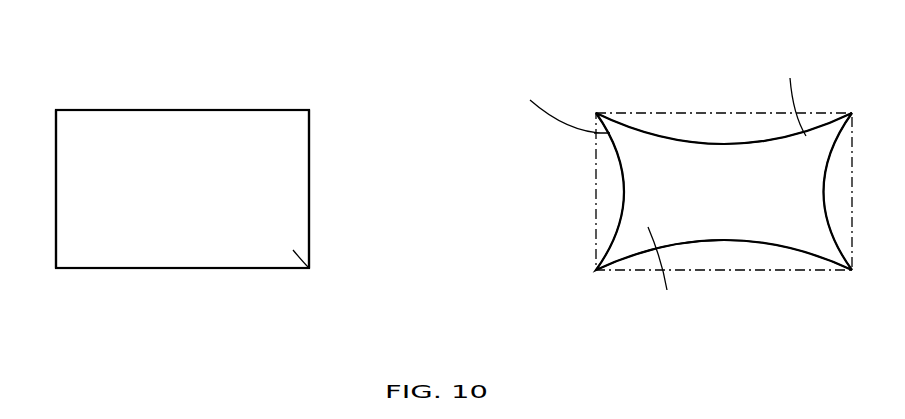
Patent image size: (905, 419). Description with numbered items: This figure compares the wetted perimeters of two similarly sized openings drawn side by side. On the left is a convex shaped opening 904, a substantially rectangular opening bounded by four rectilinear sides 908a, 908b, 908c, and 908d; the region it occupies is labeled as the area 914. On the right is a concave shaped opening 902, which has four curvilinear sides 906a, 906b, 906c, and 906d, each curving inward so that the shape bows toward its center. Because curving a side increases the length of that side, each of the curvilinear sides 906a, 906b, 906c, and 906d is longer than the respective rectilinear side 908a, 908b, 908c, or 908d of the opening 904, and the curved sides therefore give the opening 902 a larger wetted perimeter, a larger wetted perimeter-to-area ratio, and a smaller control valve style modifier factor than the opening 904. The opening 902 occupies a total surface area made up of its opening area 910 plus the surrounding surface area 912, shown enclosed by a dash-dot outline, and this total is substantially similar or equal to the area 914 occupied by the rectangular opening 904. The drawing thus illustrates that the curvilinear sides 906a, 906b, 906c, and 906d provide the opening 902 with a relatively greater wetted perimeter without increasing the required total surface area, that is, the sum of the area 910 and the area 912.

The convex shaped opening 904 is at (101, 46).
The rectilinear side 908a is at (312, 122).
The rectilinear side 908b is at (271, 272).
The rectilinear side 908c is at (56, 268).
The rectilinear side 908d is at (90, 108).
The area occupied by the rectangular opening 914 is at (309, 268).
The concave shaped opening 902 is at (598, 56).
The curvilinear side 906a is at (820, 188).
The curvilinear side 906b is at (810, 256).
The curvilinear side 906c is at (608, 246).
The curvilinear side 906d is at (750, 142).
The opening area 910 is at (667, 290).
The surrounding surface area 912 is at (600, 175).